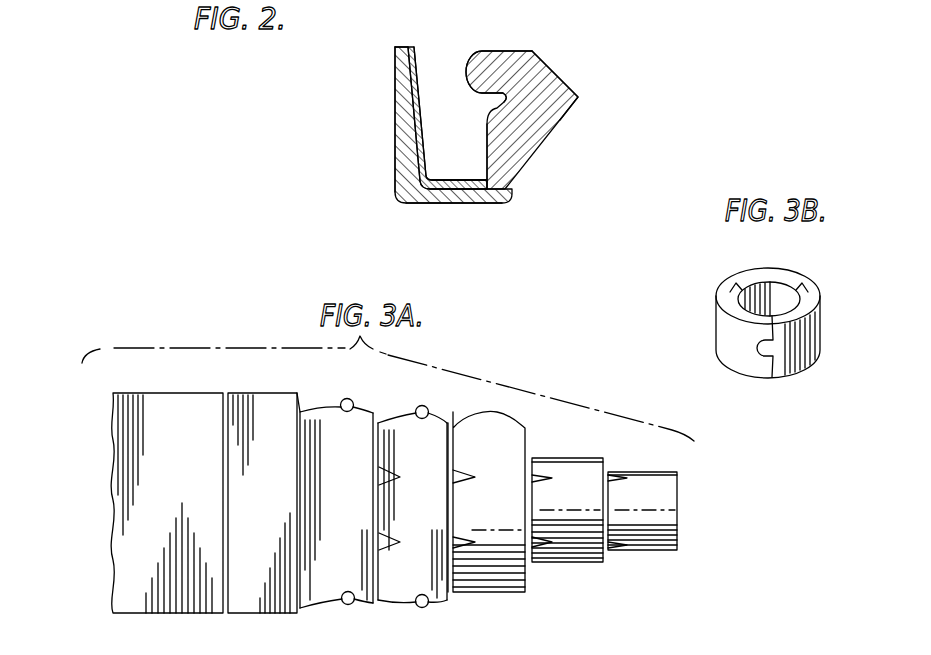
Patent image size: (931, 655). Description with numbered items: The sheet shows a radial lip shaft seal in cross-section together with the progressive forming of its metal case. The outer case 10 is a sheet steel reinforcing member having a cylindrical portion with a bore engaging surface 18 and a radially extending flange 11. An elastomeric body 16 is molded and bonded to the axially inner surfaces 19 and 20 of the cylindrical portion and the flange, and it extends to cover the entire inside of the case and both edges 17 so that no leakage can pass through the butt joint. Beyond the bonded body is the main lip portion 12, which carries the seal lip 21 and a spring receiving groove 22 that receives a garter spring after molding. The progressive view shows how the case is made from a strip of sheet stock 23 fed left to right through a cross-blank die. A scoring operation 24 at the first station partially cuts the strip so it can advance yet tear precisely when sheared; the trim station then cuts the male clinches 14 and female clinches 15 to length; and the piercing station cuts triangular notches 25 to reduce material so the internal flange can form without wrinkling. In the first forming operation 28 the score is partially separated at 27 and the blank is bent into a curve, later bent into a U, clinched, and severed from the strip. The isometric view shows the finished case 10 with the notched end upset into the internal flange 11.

In FIG. 2, the outer case 10 is at (398, 157).
In FIG. 3B, the outer case 10 is at (803, 352).
In FIG. 2, the radially extending flange 11 is at (453, 203).
In FIG. 3B, the radially extending flange 11 is at (808, 305).
In FIG. 2, the main lip portion 12 is at (543, 143).
In FIG. 3A, the male clinches 14 is at (354, 402).
In FIG. 3A, the female clinches 15 is at (350, 605).
In FIG. 2, the elastomeric body 16 is at (410, 97).
In FIG. 2, the edges of the case 17 is at (402, 47).
In FIG. 2, the bore engaging surface 18 is at (395, 107).
In FIG. 2, the axially inner surface of the cylindrical portion 19 is at (420, 141).
In FIG. 2, the axially inner surface of the flange 20 is at (455, 186).
In FIG. 2, the seal lip 21 is at (578, 98).
In FIG. 2, the spring receiving groove 22 is at (503, 95).
In FIG. 3A, the strip of sheet stock 23 is at (157, 412).
In FIG. 3A, the scoring operation 24 is at (232, 435).
In FIG. 3A, the triangular notches 25 is at (390, 478).
In FIG. 3B, the triangular notches 25 is at (737, 286).
In FIG. 3A, the partial separation 27 is at (456, 427).
In FIG. 3A, the first forming operation 28 is at (508, 442).